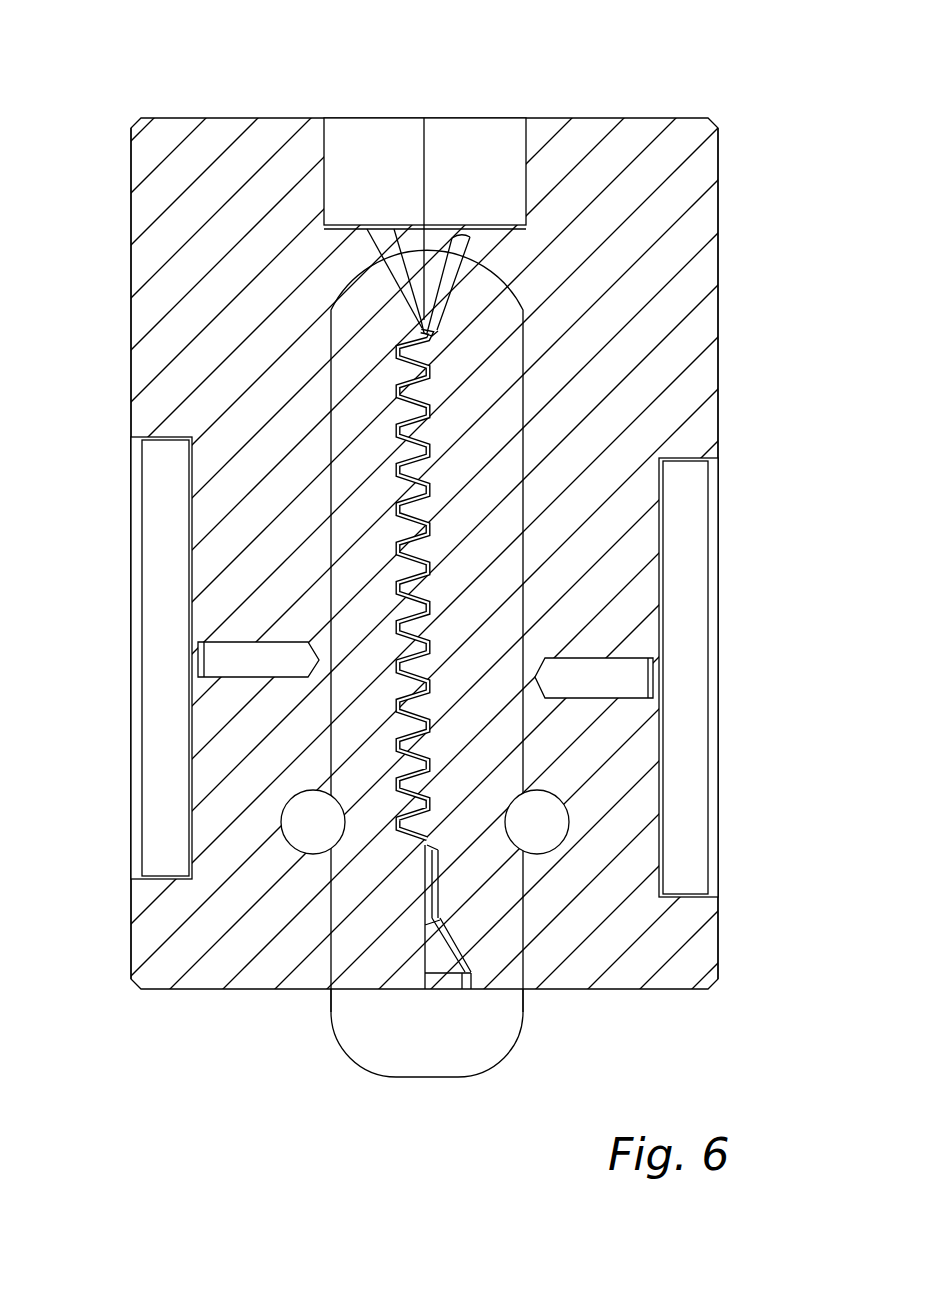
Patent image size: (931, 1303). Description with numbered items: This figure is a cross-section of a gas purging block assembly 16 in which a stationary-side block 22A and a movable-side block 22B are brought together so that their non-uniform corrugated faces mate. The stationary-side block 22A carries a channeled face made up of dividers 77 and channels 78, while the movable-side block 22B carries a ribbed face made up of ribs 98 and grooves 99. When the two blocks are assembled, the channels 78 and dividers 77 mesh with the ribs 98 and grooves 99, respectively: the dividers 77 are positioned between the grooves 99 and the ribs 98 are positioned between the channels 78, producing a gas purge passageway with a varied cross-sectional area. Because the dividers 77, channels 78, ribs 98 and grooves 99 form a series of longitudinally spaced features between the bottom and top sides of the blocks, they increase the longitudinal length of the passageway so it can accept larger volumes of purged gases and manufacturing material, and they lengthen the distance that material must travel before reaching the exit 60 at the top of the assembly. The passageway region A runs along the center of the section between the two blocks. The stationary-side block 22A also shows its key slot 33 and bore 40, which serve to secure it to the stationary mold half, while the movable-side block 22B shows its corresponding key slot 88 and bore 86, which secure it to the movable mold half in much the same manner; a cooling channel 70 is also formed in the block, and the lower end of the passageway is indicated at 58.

The sensor assembly 16 is at (695, 83).
The stationary-side block 22A is at (147, 215).
The movable-side block 22B is at (708, 215).
The exit 60 is at (460, 148).
The central channel A is at (521, 930).
The key slot 33 is at (158, 502).
The key slot 88 is at (692, 503).
The bore 40 is at (257, 666).
The bore 86 is at (592, 687).
The cooling channel 70 is at (548, 832).
The dividers 77 is at (400, 390).
The channels 78 is at (395, 365).
The ribs 98 is at (417, 355).
The grooves 99 is at (430, 385).
The lower strut 58 is at (445, 973).